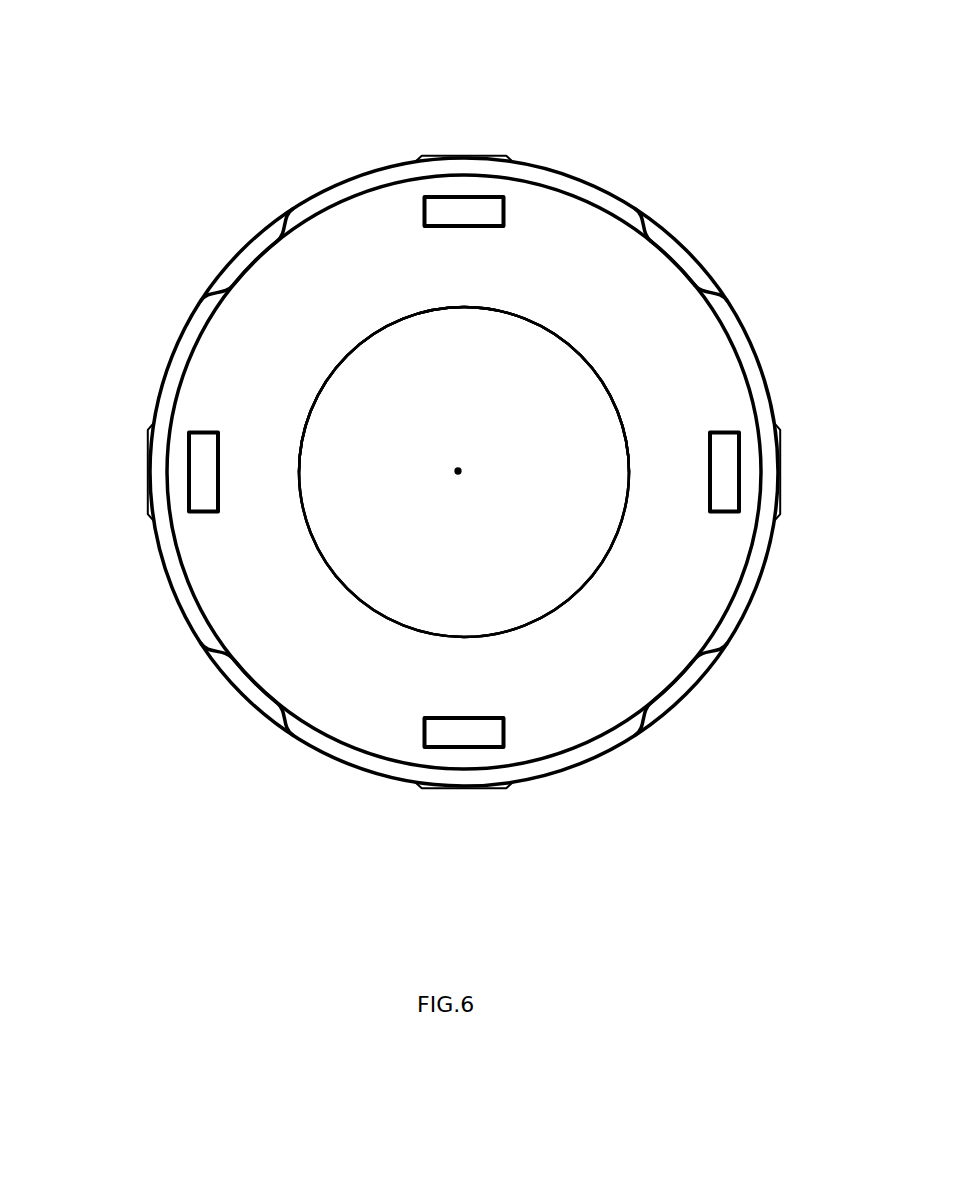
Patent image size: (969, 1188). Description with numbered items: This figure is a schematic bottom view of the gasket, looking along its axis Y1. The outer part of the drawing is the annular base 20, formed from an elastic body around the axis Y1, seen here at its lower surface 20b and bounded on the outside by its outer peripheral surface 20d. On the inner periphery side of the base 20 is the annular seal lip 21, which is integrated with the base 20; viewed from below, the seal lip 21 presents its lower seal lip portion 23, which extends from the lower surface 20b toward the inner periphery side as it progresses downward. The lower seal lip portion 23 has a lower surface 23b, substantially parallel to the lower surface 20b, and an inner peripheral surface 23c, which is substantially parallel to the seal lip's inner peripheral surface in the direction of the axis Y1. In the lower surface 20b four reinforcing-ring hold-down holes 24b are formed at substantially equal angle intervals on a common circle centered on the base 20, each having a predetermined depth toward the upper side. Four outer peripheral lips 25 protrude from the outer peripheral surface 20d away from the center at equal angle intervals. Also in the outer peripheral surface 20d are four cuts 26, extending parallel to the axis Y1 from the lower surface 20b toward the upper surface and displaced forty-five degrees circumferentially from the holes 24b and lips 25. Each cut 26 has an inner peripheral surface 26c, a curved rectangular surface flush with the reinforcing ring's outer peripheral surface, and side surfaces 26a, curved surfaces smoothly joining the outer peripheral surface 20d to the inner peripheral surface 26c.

The base 20 is at (508, 472).
The lower surface 20b is at (282, 322).
The outer peripheral surface 20d is at (766, 361).
The seal lip 21 is at (320, 490).
The lower seal lip portion 23 is at (464, 461).
The lower surface 23b is at (465, 285).
The inner peripheral surface 23c is at (318, 402).
The reinforcing-ring hold-down hole 24b is at (473, 203).
The outer peripheral lip 25 is at (462, 154).
The cut 26 is at (502, 455).
The side surface 26a is at (651, 214).
The inner peripheral surface 26c is at (686, 265).
The axis Y1 is at (460, 470).